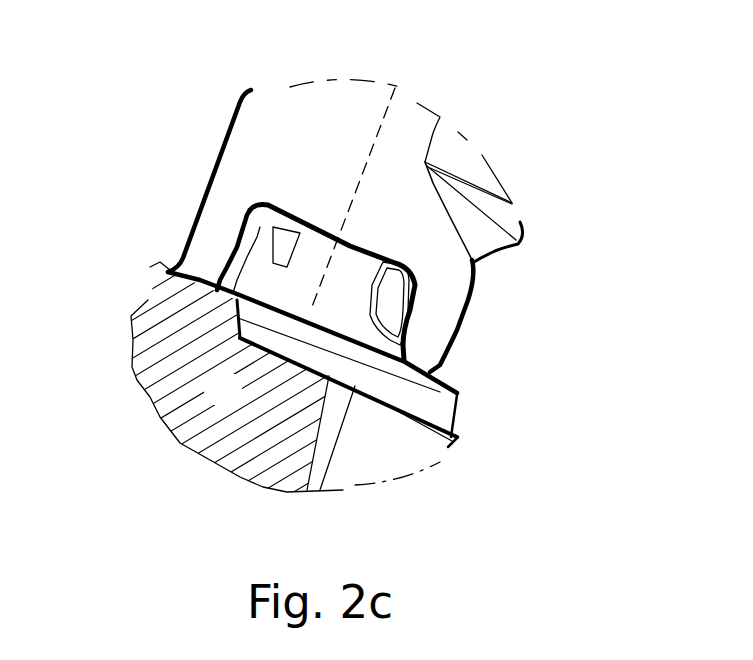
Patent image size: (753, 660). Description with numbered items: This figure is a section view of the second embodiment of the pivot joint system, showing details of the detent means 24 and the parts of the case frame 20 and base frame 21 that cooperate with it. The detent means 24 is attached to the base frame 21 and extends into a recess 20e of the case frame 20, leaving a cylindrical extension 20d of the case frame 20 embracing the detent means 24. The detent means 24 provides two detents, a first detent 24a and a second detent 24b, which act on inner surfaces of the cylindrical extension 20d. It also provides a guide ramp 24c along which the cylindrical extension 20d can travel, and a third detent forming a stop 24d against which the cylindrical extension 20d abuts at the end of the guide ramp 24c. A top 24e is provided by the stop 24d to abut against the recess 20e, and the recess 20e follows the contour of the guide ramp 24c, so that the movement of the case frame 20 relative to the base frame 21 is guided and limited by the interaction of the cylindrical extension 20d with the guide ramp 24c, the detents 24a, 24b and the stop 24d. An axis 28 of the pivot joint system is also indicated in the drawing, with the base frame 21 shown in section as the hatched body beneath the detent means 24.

The case frame 20 is at (338, 162).
The cylindrical extension 20d is at (436, 316).
The recess 20e is at (360, 240).
The base frame 21 is at (238, 403).
The detent means 24 is at (290, 297).
The first detent 24a is at (407, 347).
The second detent 24b is at (213, 273).
The guide ramp 24c is at (335, 300).
The stop 24d is at (258, 238).
The top 24e is at (262, 205).
The axis 28 is at (391, 261).